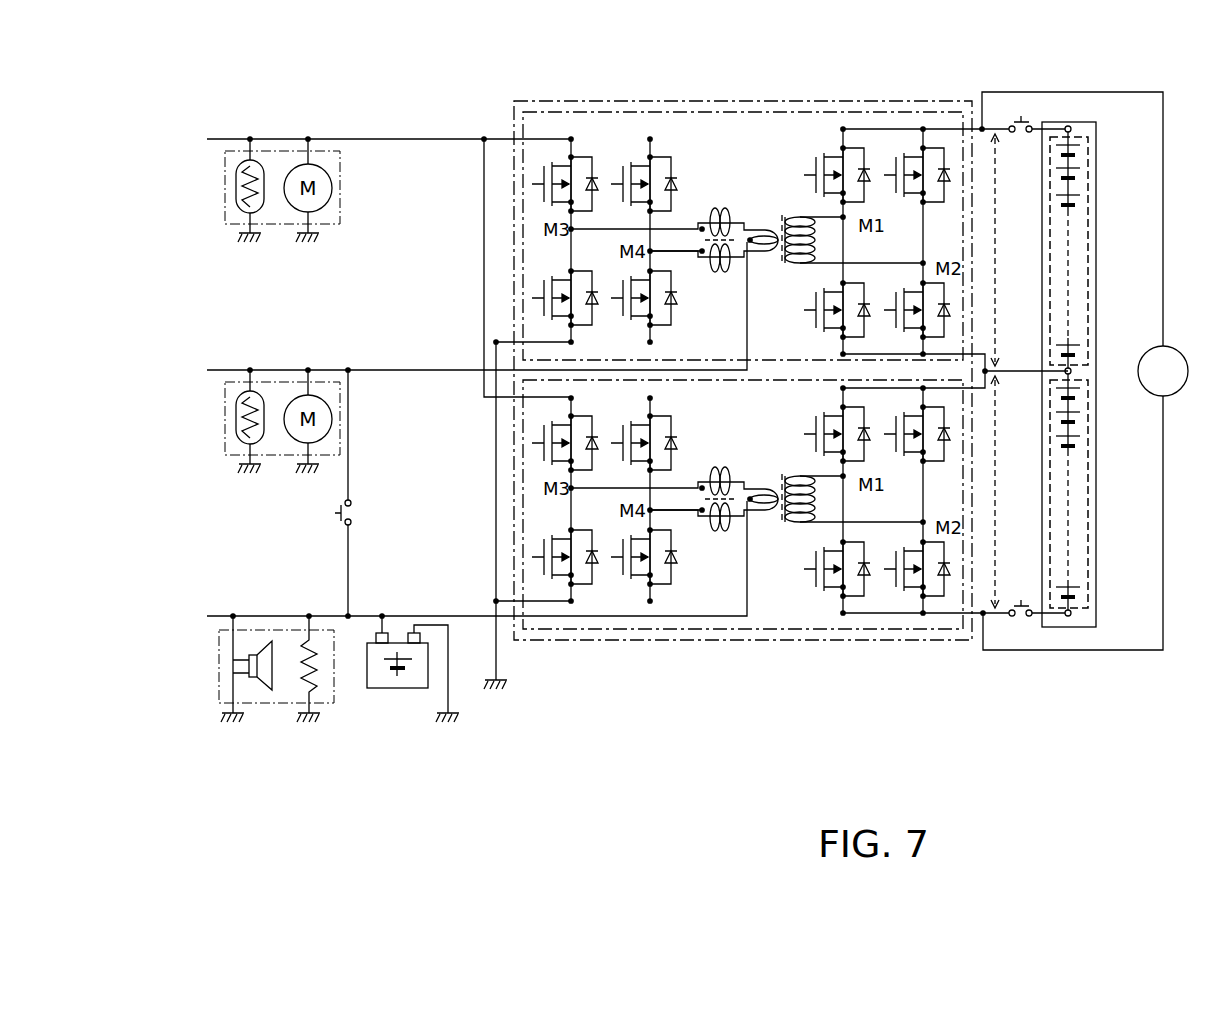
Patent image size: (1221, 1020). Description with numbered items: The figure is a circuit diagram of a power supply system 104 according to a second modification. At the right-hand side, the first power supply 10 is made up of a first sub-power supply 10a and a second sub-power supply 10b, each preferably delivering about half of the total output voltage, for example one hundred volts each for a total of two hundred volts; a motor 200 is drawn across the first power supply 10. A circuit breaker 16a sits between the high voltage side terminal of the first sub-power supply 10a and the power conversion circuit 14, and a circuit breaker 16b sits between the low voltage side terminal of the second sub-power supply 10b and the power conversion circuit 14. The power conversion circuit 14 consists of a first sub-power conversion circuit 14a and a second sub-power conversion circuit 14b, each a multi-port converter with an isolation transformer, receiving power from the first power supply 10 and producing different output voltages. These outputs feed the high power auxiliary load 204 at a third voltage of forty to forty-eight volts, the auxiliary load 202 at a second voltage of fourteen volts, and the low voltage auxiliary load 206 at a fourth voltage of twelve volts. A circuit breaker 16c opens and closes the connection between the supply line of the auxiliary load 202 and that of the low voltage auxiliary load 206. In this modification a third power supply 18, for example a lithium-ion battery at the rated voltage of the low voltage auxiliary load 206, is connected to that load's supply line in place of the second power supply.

The power supply system 104 is at (663, 812).
The power conversion circuit 14 is at (880, 103).
The first sub-power conversion circuit 14a is at (585, 115).
The second sub-power conversion circuit 14b is at (580, 626).
The first power supply 10 is at (1098, 139).
The first sub-power supply 10a is at (1089, 170).
The second sub-power supply 10b is at (1089, 462).
The circuit breaker 16a is at (1019, 137).
The circuit breaker 16b is at (1021, 605).
The circuit breaker 16c is at (357, 512).
The third power supply 18 is at (407, 685).
The motor 200 is at (1150, 352).
The auxiliary load 202 is at (225, 412).
The high power auxiliary load 204 is at (225, 180).
The low voltage auxiliary load 206 is at (219, 662).